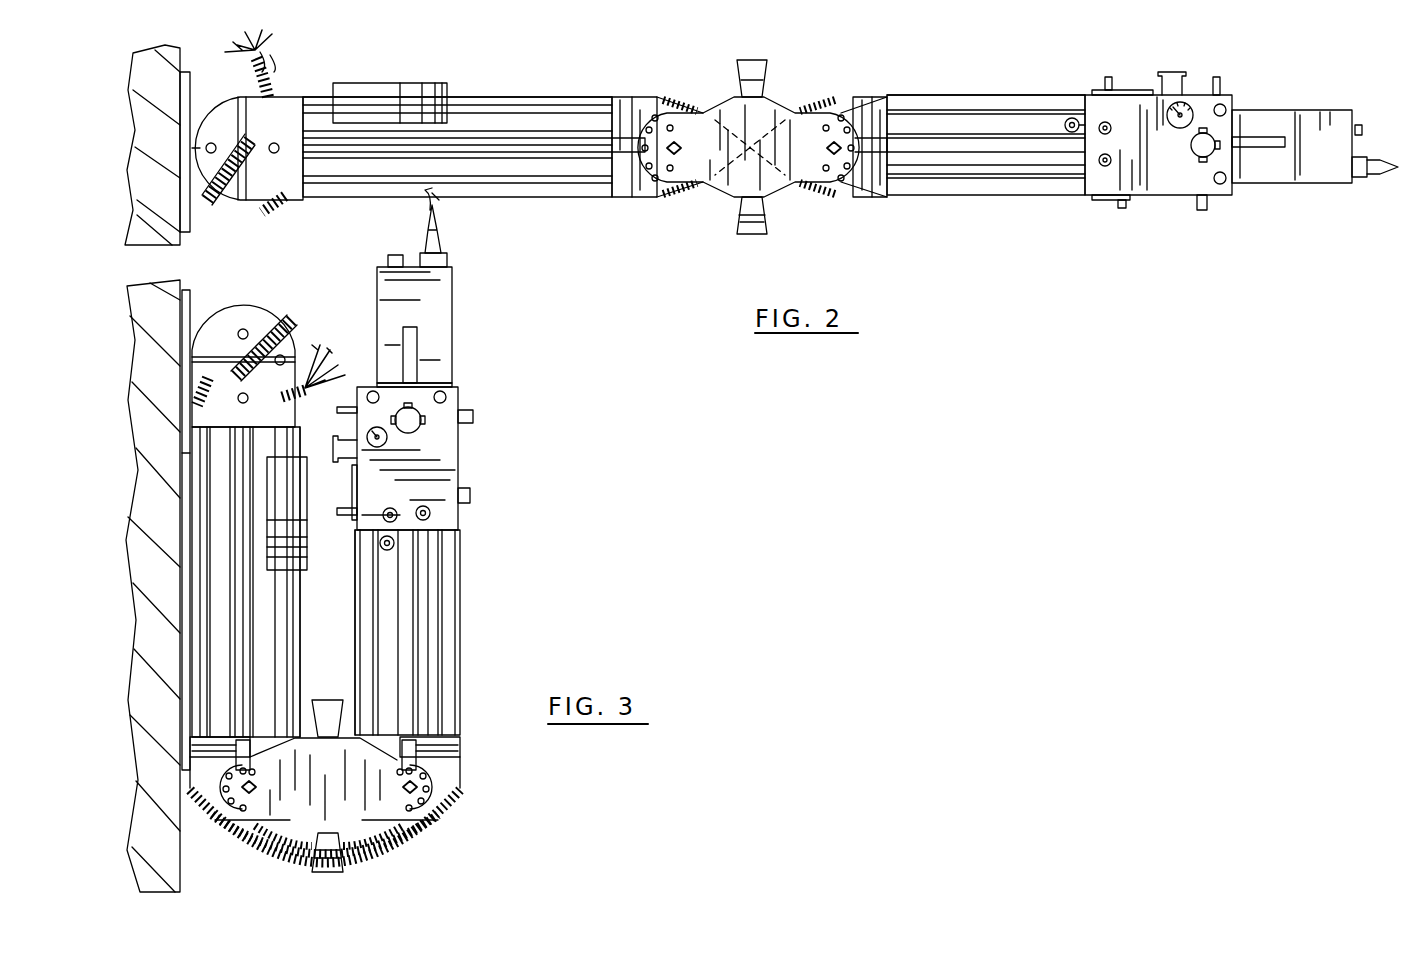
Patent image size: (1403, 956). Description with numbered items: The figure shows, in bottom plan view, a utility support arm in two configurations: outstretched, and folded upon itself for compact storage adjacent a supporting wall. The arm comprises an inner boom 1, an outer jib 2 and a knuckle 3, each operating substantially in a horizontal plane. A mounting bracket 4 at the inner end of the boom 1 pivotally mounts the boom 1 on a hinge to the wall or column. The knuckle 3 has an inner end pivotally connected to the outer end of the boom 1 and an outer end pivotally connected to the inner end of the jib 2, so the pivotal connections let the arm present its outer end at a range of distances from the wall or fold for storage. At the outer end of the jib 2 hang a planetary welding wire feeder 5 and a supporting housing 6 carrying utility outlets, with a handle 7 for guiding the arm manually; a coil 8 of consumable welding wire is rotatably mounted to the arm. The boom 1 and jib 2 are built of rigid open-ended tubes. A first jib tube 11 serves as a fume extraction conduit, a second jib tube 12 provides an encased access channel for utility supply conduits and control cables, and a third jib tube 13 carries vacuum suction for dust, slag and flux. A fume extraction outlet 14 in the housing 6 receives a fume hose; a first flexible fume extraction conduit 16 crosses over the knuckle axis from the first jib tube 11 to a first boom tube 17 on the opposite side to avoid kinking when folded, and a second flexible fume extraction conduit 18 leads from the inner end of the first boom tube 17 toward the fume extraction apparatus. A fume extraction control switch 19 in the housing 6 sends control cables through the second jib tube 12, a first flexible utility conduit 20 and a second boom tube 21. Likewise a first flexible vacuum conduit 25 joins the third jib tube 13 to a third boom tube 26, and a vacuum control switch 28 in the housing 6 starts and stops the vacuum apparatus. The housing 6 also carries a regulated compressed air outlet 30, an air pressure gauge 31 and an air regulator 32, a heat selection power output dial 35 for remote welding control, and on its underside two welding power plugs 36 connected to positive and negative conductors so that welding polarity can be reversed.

In FIG. 2, the inner boom 1 is at (457, 137).
In FIG. 3, the inner boom 1 is at (238, 582).
In FIG. 2, the outer jib 2 is at (986, 133).
In FIG. 3, the outer jib 2 is at (434, 632).
In FIG. 2, the knuckle 3 is at (762, 140).
In FIG. 3, the knuckle 3 is at (344, 799).
In FIG. 2, the mounting bracket 4 is at (183, 72).
In FIG. 3, the mounting bracket 4 is at (195, 297).
In FIG. 2, the planetary welding wire feeder 5 is at (1315, 169).
In FIG. 3, the planetary welding wire feeder 5 is at (436, 285).
In FIG. 2, the supporting housing 6 is at (1164, 150).
In FIG. 3, the supporting housing 6 is at (420, 477).
In FIG. 2, the handle 7 is at (1270, 183).
In FIG. 3, the handle 7 is at (420, 345).
In FIG. 2, the coil of consumable welding wire 8 is at (353, 85).
In FIG. 3, the coil of consumable welding wire 8 is at (300, 457).
In FIG. 2, the first jib tube 11 is at (905, 95).
In FIG. 3, the first jib tube 11 is at (357, 672).
In FIG. 2, the second jib tube 12 is at (955, 195).
In FIG. 3, the second jib tube 12 is at (458, 668).
In FIG. 2, the third jib tube 13 is at (1045, 180).
In FIG. 3, the third jib tube 13 is at (425, 695).
In FIG. 2, the fume extraction outlet 14 is at (1168, 75).
In FIG. 3, the fume extraction outlet 14 is at (345, 449).
In FIG. 2, the first flexible fume extraction conduit 16 is at (808, 95).
In FIG. 3, the first flexible fume extraction conduit 16 is at (275, 860).
In FIG. 2, the first boom tube 17 is at (553, 197).
In FIG. 3, the first boom tube 17 is at (190, 672).
In FIG. 2, the second flexible fume extraction conduit 18 is at (277, 210).
In FIG. 3, the second flexible fume extraction conduit 18 is at (200, 385).
In FIG. 2, the fume extraction control switch 19 is at (1106, 78).
In FIG. 3, the fume extraction control switch 19 is at (343, 516).
In FIG. 2, the first flexible utility conduit 20 is at (790, 197).
In FIG. 3, the first flexible utility conduit 20 is at (440, 845).
In FIG. 2, the second boom tube 21 is at (570, 97).
In FIG. 3, the second boom tube 21 is at (298, 705).
In FIG. 3, the first flexible vacuum conduit 25 is at (232, 852).
In FIG. 2, the third boom tube 26 is at (488, 180).
In FIG. 3, the third boom tube 26 is at (258, 638).
In FIG. 2, the vacuum control switch 28 is at (1120, 207).
In FIG. 3, the vacuum control switch 28 is at (471, 497).
In FIG. 2, the regulated compressed air outlet 30 is at (1222, 110).
In FIG. 2, the air pressure gauge 31 is at (1171, 140).
In FIG. 3, the air pressure gauge 31 is at (377, 437).
In FIG. 2, the air regulator 32 is at (1220, 80).
In FIG. 2, the heat selection power output dial 35 is at (1200, 210).
In FIG. 3, the heat selection power output dial 35 is at (474, 416).
In FIG. 2, the welding power plugs 36 is at (1102, 125).
In FIG. 3, the welding power plugs 36 is at (423, 506).